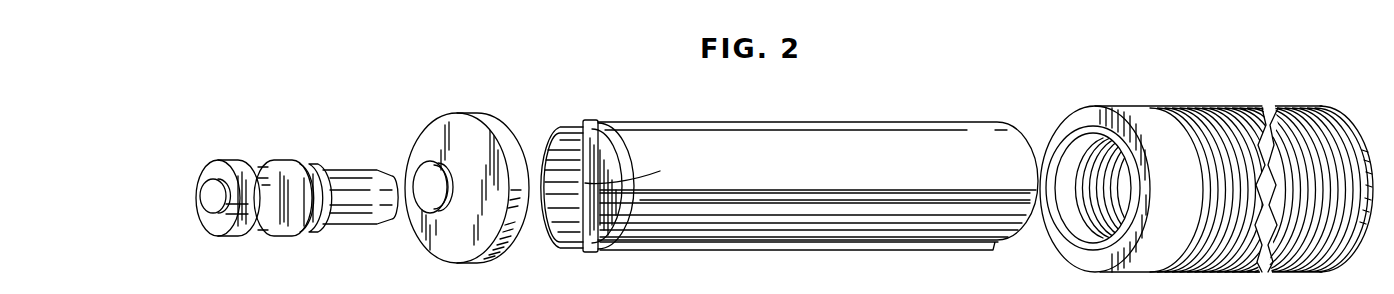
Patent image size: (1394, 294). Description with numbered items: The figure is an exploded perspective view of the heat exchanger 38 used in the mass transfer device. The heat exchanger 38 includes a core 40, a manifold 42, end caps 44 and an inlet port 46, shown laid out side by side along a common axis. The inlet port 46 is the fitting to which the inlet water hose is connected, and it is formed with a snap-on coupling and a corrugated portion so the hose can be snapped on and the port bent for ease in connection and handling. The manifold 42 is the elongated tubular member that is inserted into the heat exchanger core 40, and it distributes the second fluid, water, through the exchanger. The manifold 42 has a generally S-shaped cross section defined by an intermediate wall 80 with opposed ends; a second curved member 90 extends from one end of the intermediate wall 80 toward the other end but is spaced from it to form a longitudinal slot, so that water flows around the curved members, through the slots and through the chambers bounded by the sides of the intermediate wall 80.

The heat exchanger 38 is at (605, 108).
The core 40 is at (1182, 95).
The manifold 42 is at (667, 152).
The end caps 44 is at (468, 142).
The inlet port 46 is at (345, 182).
The intermediate wall 80 is at (635, 172).
The second curved member 90 is at (663, 194).